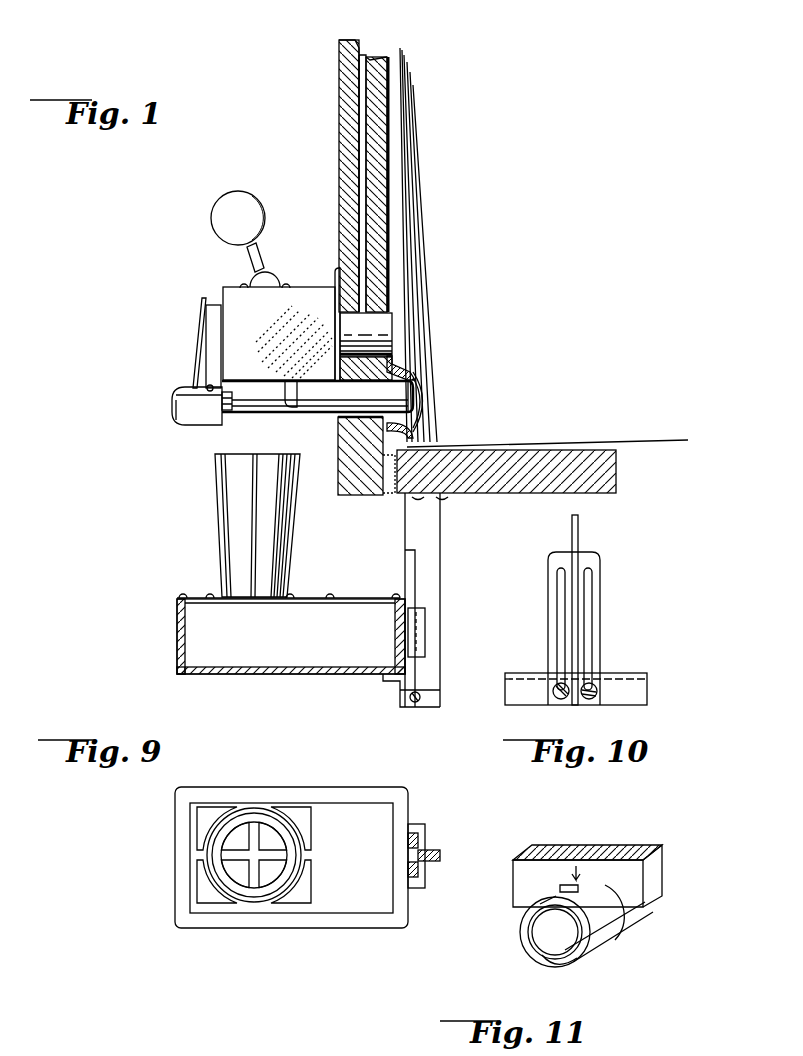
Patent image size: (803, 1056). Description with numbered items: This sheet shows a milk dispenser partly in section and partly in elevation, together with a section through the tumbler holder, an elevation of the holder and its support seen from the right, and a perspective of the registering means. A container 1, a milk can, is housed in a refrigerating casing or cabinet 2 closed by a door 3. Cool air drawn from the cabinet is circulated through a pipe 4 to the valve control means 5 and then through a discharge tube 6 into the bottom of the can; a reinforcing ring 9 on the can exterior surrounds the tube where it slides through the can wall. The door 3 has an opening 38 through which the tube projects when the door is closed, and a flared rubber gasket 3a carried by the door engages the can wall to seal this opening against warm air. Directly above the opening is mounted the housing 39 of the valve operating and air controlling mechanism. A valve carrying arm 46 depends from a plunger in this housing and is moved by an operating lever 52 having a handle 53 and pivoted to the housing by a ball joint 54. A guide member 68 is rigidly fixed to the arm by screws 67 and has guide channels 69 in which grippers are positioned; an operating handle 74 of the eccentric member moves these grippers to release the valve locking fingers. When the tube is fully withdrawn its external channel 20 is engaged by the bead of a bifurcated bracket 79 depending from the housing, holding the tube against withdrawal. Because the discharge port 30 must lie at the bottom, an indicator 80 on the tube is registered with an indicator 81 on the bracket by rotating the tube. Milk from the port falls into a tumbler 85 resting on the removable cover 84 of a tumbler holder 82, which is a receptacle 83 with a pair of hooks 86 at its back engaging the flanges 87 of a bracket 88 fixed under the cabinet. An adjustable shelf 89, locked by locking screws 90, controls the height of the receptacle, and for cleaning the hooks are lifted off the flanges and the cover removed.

In FIG. 1, the container 1 is at (405, 110).
In FIG. 1, the casing or cabinet 2 is at (610, 472).
In FIG. 1, the door 3 is at (339, 68).
In FIG. 1, the rubber gasket 3a is at (408, 372).
In FIG. 1, the pipe 4 is at (364, 57).
In FIG. 1, the valve control means 5 is at (284, 337).
In FIG. 1, the discharge tube 6 is at (330, 410).
In FIG. 1, the reinforcing ring 9 is at (422, 386).
In FIG. 1, the external channel 20 is at (296, 412).
In FIG. 1, the discharge port 30 is at (275, 408).
In FIG. 11, the discharge port 30 is at (556, 960).
In FIG. 1, the opening 38 is at (364, 420).
In FIG. 1, the housing 39 is at (302, 292).
In FIG. 1, the valve carrying arm 46 is at (210, 304).
In FIG. 1, the operating lever 52 is at (262, 260).
In FIG. 1, the handle 53 is at (248, 210).
In FIG. 1, the ball joint 54 is at (250, 282).
In FIG. 1, the screws 67 is at (207, 386).
In FIG. 1, the guide member 68 is at (176, 422).
In FIG. 1, the guide channels 69 is at (182, 404).
In FIG. 1, the operating handle 74 is at (195, 320).
In FIG. 1, the bifurcated bracket 79 is at (290, 390).
In FIG. 11, the indicator 80 is at (580, 888).
In FIG. 11, the indicator 81 is at (576, 866).
In FIG. 1, the tumbler holder 82 is at (179, 670).
In FIG. 1, the receptacle 83 is at (291, 636).
In FIG. 9, the receptacle 83 is at (365, 790).
In FIG. 1, the removable cover 84 is at (186, 596).
In FIG. 9, the removable cover 84 is at (277, 855).
In FIG. 1, the tumbler 85 is at (224, 497).
In FIG. 1, the hooks 86 is at (425, 640).
In FIG. 9, the hooks 86 is at (420, 824).
In FIG. 1, the flanges 87 is at (416, 594).
In FIG. 10, the flanges 87 is at (553, 598).
In FIG. 9, the flanges 87 is at (418, 836).
In FIG. 1, the bracket 88 is at (432, 521).
In FIG. 10, the bracket 88 is at (580, 524).
In FIG. 9, the bracket 88 is at (440, 853).
In FIG. 1, the adjustable shelf 89 is at (402, 698).
In FIG. 10, the adjustable shelf 89 is at (640, 684).
In FIG. 1, the locking screws 90 is at (420, 700).
In FIG. 10, the locking screws 90 is at (591, 700).